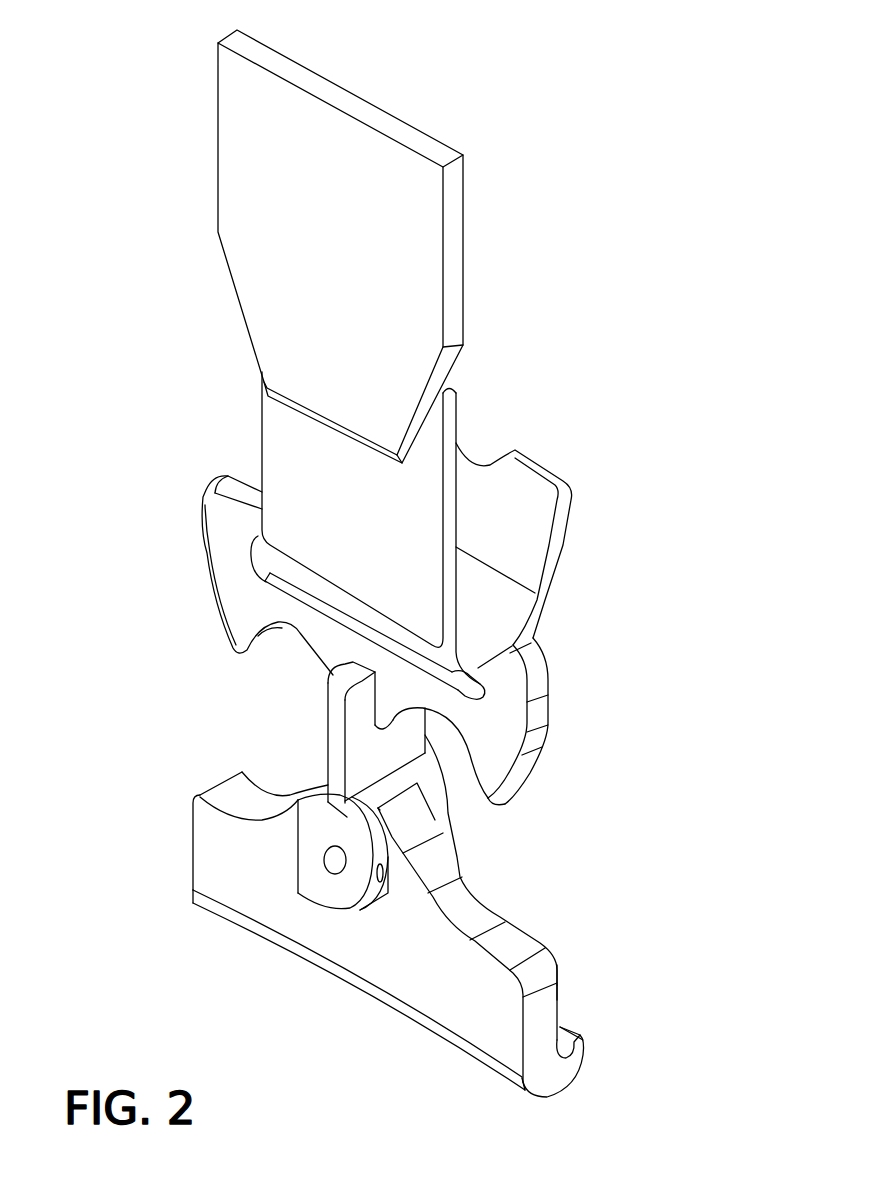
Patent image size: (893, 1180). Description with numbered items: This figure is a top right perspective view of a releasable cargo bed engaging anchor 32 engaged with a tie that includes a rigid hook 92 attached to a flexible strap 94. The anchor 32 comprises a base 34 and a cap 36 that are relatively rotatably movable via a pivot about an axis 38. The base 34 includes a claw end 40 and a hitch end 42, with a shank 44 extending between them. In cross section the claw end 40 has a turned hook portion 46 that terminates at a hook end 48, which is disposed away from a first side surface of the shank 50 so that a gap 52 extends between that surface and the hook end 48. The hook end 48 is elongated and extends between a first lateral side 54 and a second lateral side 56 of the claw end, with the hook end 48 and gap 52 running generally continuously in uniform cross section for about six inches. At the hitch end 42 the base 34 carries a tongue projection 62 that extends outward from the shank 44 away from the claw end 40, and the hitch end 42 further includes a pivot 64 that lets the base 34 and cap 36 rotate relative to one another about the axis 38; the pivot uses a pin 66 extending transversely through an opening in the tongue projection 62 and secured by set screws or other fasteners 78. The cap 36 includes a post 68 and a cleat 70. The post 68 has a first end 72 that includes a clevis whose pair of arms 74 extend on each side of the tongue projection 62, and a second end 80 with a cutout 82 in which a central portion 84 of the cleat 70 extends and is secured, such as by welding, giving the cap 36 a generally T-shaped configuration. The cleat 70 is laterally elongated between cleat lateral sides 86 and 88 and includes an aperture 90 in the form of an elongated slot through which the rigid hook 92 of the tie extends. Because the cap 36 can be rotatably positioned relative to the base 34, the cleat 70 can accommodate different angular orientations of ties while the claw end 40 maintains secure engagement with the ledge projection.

The cargo bed engaging anchor 32 is at (714, 628).
The base 34 is at (642, 915).
The cap 36 is at (633, 718).
The axis 38 is at (338, 861).
The claw end 40 is at (567, 1083).
The hitch end 42 is at (432, 853).
The shank 44 is at (375, 958).
The turned hook portion 46 is at (585, 1055).
The hook end 48 is at (563, 1030).
The first side surface of the shank 50 is at (560, 990).
The gap 52 is at (569, 999).
The first lateral side 54 is at (542, 1085).
The second lateral side 56 is at (193, 891).
The tongue projection 62 is at (413, 825).
The pivot 64 is at (402, 886).
The pin 66 is at (330, 878).
The post 68 is at (338, 750).
The cleat 70 is at (205, 503).
The first end 72 is at (377, 900).
The arms 74 is at (317, 824).
The fasteners 78 is at (383, 893).
The second end 80 is at (328, 690).
The cutout 82 is at (393, 728).
The central portion 84 is at (398, 718).
The cleat lateral side 86 is at (207, 585).
The cleat lateral side 88 is at (542, 757).
The aperture 90 is at (470, 681).
The rigid hook 92 is at (566, 543).
The flexible strap 94 is at (466, 265).